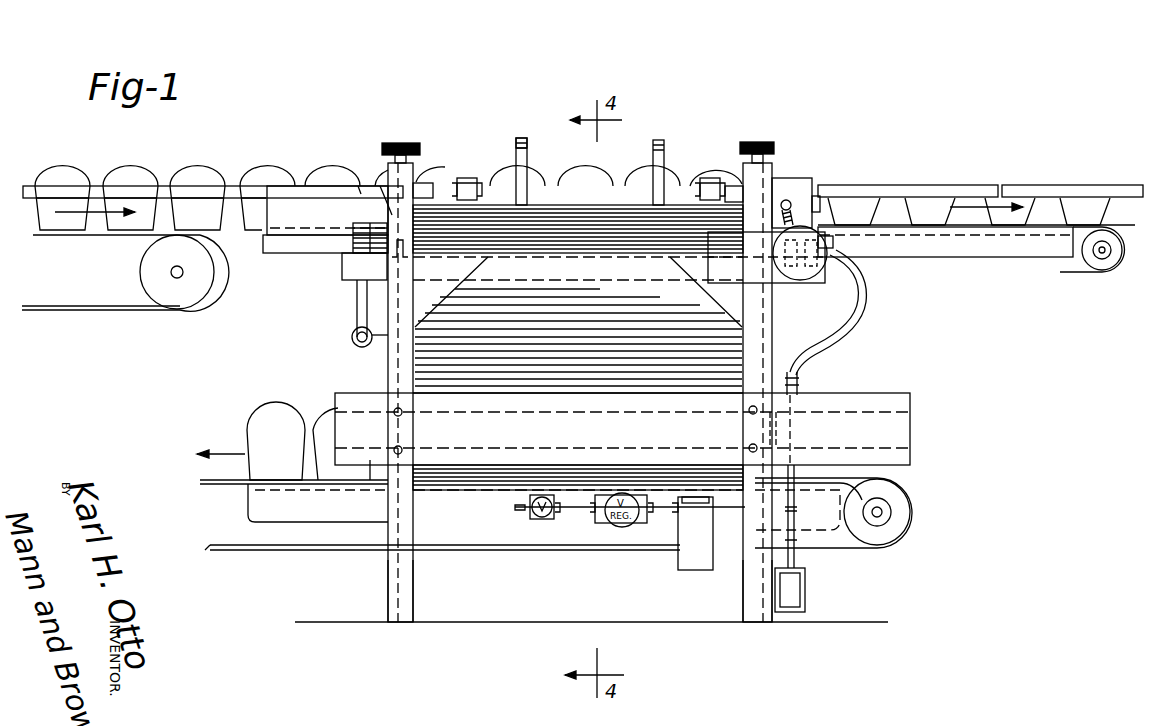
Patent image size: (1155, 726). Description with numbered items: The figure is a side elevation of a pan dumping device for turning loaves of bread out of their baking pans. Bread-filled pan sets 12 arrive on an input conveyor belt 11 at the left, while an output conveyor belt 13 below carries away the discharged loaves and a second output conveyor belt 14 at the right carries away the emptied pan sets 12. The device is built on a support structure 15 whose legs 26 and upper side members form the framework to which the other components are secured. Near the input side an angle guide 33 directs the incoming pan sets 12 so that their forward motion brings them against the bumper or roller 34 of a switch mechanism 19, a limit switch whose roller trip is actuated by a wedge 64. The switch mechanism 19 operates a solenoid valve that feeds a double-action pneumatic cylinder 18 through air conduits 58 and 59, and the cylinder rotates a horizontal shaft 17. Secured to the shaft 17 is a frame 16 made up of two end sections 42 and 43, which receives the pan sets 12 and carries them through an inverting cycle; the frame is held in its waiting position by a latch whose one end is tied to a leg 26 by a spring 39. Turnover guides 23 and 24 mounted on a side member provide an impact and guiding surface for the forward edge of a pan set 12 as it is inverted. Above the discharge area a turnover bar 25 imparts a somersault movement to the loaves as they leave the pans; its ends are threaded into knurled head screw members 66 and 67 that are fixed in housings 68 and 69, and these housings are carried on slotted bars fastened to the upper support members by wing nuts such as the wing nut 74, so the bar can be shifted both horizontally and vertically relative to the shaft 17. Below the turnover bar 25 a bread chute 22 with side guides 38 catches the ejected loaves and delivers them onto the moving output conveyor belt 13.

The input conveyor belt 11 is at (150, 230).
The pan sets 12 is at (65, 162).
The output conveyor belt 13 is at (300, 474).
The output conveyor belt 14 is at (1088, 270).
The support structure 15 is at (385, 362).
The frame 16 is at (528, 146).
The shaft 17 is at (385, 222).
The pneumatic cylinder 18 is at (771, 263).
The switch mechanism 19 is at (805, 178).
The chute 22 is at (578, 347).
The turnover guide 23 is at (712, 178).
The turnover guide 24 is at (486, 171).
The turnover bar 25 is at (390, 213).
The legs 26 is at (386, 586).
The angle guide 33 is at (320, 192).
The bumper or roller 34 is at (740, 185).
The side guides 38 is at (355, 226).
The spring 39 is at (352, 334).
The end section 42 is at (658, 140).
The end section 43 is at (520, 140).
The air conduit 58 is at (825, 328).
The air conduit 59 is at (862, 300).
The wedge 64 is at (820, 200).
The knurled head screw member 66 is at (762, 143).
The knurled head screw member 67 is at (395, 144).
The housing 68 is at (772, 170).
The housing 69 is at (417, 181).
The wing nut 74 is at (402, 258).